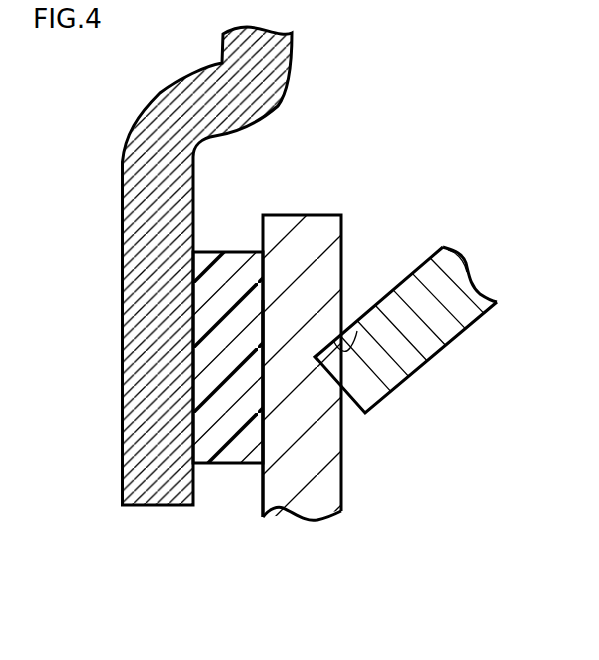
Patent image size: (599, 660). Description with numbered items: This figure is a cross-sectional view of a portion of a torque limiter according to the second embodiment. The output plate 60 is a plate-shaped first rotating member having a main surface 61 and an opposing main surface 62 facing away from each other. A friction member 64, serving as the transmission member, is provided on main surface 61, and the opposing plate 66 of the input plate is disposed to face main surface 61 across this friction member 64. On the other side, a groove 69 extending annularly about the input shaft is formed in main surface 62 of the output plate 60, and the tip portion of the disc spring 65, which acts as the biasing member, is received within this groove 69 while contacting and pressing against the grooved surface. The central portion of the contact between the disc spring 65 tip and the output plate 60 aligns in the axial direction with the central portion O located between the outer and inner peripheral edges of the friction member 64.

The output plate 60 is at (304, 500).
The main surface 61 is at (265, 483).
The main surface 62 is at (343, 471).
The friction member 64 is at (230, 448).
The disc spring 65 is at (437, 332).
The opposing plate 66 is at (160, 488).
The groove 69 is at (350, 340).
The central portion O is at (228, 357).